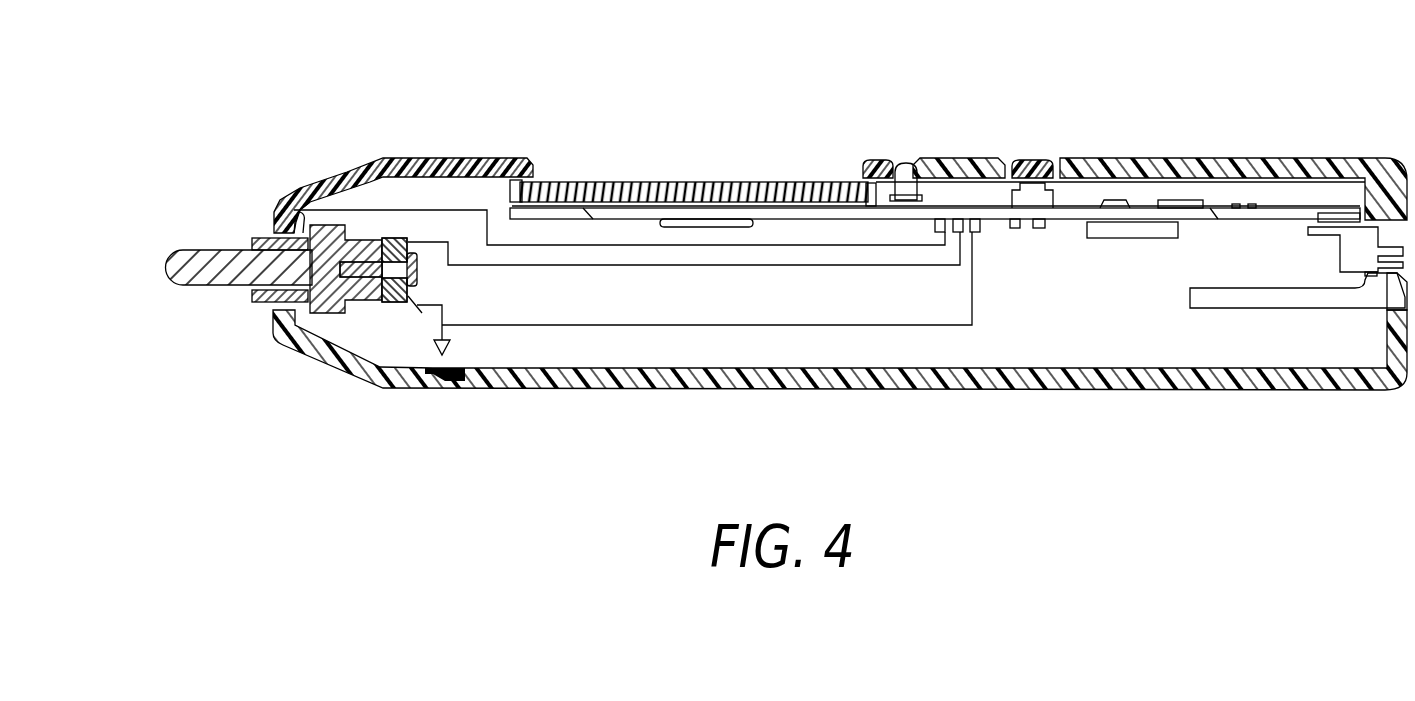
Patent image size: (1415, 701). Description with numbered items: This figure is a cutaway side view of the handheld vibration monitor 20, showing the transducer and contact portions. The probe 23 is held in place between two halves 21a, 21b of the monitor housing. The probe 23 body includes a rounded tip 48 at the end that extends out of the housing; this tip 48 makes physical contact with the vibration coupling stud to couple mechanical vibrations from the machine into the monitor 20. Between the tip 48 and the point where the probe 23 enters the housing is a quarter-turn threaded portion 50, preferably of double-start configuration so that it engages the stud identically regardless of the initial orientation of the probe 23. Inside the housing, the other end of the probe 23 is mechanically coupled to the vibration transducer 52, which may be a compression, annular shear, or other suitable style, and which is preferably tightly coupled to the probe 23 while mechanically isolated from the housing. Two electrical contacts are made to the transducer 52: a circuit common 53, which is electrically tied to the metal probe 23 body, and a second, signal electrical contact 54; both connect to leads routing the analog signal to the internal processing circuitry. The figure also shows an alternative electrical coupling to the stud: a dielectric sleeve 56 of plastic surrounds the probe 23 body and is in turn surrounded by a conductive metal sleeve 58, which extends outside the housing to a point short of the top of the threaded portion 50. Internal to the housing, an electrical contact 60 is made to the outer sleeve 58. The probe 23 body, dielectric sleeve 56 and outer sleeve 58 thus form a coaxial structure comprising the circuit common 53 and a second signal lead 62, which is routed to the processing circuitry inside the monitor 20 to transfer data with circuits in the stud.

The handheld vibration monitor 20 is at (240, 106).
The housing half 21a is at (412, 157).
The housing half 21b is at (330, 364).
The probe 23 is at (196, 238).
The rounded tip 48 is at (168, 267).
The threaded portion 50 is at (215, 280).
The vibration transducer 52 is at (407, 297).
The circuit common 53 is at (713, 325).
The signal electrical contact 54 is at (577, 265).
The dielectric sleeve 56 is at (265, 237).
The conductive metal sleeve 58 is at (257, 305).
The electrical contact 60 is at (300, 220).
The second signal lead 62 is at (372, 207).